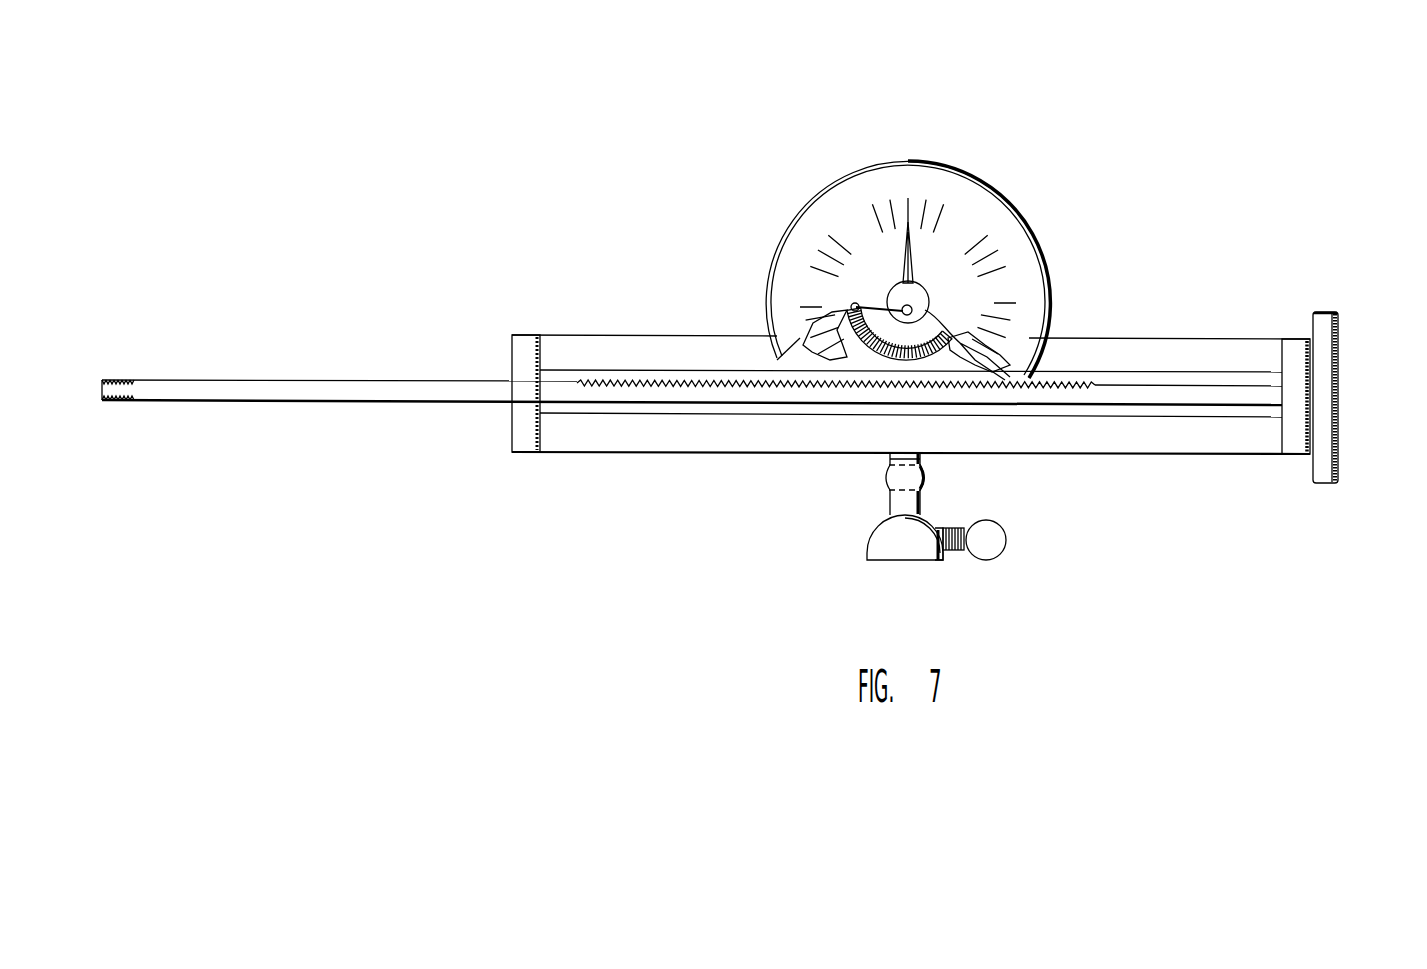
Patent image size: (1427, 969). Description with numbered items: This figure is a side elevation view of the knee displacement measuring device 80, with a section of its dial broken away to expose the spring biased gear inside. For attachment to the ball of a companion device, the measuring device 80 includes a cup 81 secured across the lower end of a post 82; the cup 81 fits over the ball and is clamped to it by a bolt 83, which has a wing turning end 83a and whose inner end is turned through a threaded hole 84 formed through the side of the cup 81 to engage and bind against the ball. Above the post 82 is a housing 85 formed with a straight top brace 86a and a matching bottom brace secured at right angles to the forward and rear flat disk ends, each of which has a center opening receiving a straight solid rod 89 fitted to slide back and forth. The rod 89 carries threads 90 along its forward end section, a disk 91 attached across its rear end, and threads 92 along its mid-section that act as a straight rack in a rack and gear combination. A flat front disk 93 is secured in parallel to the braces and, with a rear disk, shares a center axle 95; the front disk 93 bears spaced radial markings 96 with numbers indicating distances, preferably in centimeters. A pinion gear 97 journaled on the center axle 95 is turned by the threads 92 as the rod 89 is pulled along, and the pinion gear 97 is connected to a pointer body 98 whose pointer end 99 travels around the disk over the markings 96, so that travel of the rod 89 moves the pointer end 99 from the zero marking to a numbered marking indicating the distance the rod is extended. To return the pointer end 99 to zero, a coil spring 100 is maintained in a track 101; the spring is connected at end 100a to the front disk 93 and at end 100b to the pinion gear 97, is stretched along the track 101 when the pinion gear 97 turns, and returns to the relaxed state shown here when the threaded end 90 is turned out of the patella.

The knee displacement measuring device 80 is at (1052, 221).
The cup 81 is at (880, 545).
The post 82 is at (883, 477).
The bolt 83 is at (947, 527).
The wing turning end 83a is at (993, 540).
The threaded hole 84 is at (937, 547).
The housing 85 is at (1297, 487).
The top brace 86a is at (637, 347).
The straight solid rod 89 is at (577, 383).
The threads 90 is at (378, 385).
The disk 91 is at (1337, 372).
The threads 92 is at (1187, 390).
The front disk 93 is at (893, 165).
The center axle 95 is at (858, 217).
The radial markings 96 is at (877, 305).
The pinion gear 97 is at (774, 345).
The pointer body 98 is at (927, 310).
The pointer end 99 is at (915, 268).
The coil spring 100 is at (840, 325).
The spring end 100a is at (855, 305).
The spring end 100b is at (958, 352).
The track 101 is at (880, 362).